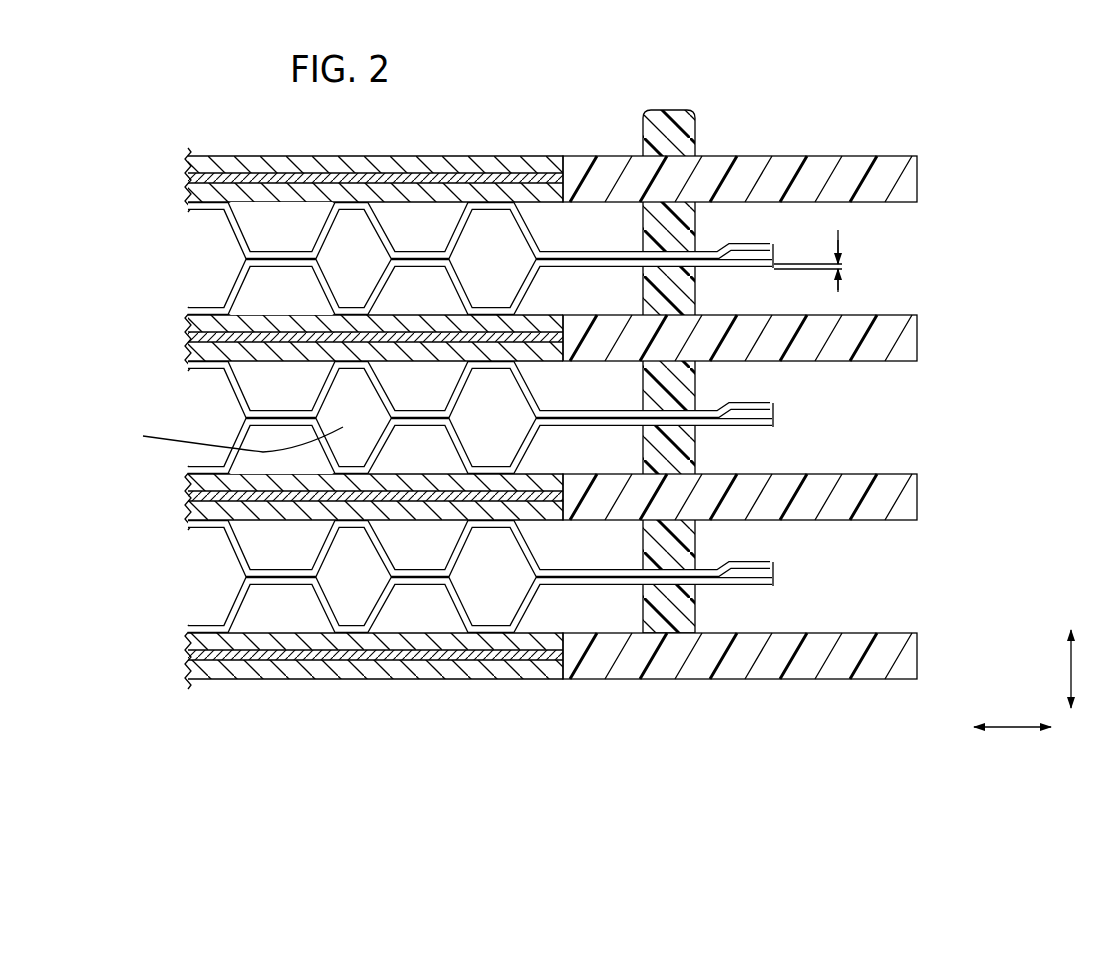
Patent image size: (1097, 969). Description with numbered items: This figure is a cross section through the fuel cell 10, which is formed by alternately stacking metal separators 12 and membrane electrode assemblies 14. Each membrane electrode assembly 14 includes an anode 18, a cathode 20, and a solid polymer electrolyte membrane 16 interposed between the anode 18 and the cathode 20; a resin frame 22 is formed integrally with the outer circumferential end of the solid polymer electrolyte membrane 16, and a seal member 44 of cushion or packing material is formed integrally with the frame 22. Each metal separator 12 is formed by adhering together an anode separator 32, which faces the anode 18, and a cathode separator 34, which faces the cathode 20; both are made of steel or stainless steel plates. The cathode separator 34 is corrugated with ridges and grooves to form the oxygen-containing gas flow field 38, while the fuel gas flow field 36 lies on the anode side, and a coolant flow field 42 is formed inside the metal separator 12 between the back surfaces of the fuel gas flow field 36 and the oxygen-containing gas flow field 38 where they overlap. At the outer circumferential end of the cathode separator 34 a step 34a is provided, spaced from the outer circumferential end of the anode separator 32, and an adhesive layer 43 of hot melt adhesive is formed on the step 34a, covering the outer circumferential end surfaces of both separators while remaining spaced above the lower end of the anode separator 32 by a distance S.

The fuel cell 10 is at (526, 108).
The metal separator 12 is at (275, 228).
The membrane electrode assembly 14 is at (919, 161).
The solid polymer electrolyte membrane 16 is at (188, 337).
The anode 18 is at (188, 322).
The cathode 20 is at (188, 352).
The resin frame 22 is at (878, 316).
The anode separator 32 is at (530, 300).
The cathode separator 34 is at (530, 224).
The step 34a is at (745, 257).
The fuel gas flow field 36 is at (281, 291).
The oxygen-containing gas flow field 38 is at (281, 422).
The coolant flow field 42 is at (492, 417).
The adhesive layer 43 is at (754, 260).
The seal member 44 is at (698, 123).